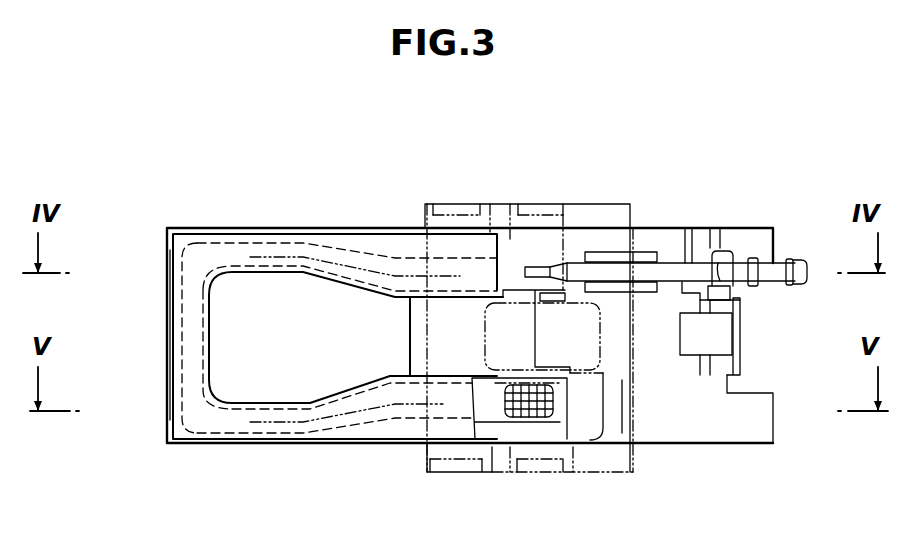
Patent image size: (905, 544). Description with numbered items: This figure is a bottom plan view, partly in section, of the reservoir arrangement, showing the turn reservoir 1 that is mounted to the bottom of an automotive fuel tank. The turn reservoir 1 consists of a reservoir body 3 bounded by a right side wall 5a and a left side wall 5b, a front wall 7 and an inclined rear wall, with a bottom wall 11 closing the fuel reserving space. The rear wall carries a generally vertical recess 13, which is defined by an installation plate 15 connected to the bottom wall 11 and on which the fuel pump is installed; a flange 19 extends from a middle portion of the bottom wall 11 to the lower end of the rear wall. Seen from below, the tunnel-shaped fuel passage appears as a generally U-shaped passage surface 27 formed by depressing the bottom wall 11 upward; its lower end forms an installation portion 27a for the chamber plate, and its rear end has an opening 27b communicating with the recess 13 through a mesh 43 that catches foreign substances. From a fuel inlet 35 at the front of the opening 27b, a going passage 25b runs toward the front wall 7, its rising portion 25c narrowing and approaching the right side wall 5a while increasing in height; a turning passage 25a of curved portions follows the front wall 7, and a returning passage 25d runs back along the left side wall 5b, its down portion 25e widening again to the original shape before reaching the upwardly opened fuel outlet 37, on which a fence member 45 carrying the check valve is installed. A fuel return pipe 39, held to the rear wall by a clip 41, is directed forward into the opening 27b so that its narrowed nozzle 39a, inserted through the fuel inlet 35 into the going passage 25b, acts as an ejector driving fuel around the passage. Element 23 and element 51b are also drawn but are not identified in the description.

The turn reservoir 1 is at (177, 226).
The reservoir body 3 is at (222, 232).
The right side wall 5a is at (270, 233).
The left side wall 5b is at (252, 447).
The front wall 7 is at (167, 297).
The bottom wall 11 is at (296, 397).
The recess 13 is at (748, 342).
The installation plate 15 is at (665, 370).
The flange 19 is at (484, 450).
The upper boss 23 is at (468, 212).
The turning passage 25a is at (185, 373).
The going passage 25b is at (452, 266).
The rising portion 25c is at (362, 250).
The returning passage 25d is at (445, 425).
The down portion 25e is at (356, 445).
The passage surface 27 is at (408, 425).
The installation portion 27a is at (376, 430).
The opening 27b is at (548, 240).
The fuel inlet 35 is at (512, 268).
The fuel outlet 37 is at (528, 432).
The fuel return pipe 39 is at (792, 262).
The nozzle 39a is at (583, 268).
The clip 41 is at (722, 250).
The mesh 43 is at (605, 262).
The fence member 45 is at (558, 425).
The boss recess 51b is at (497, 212).